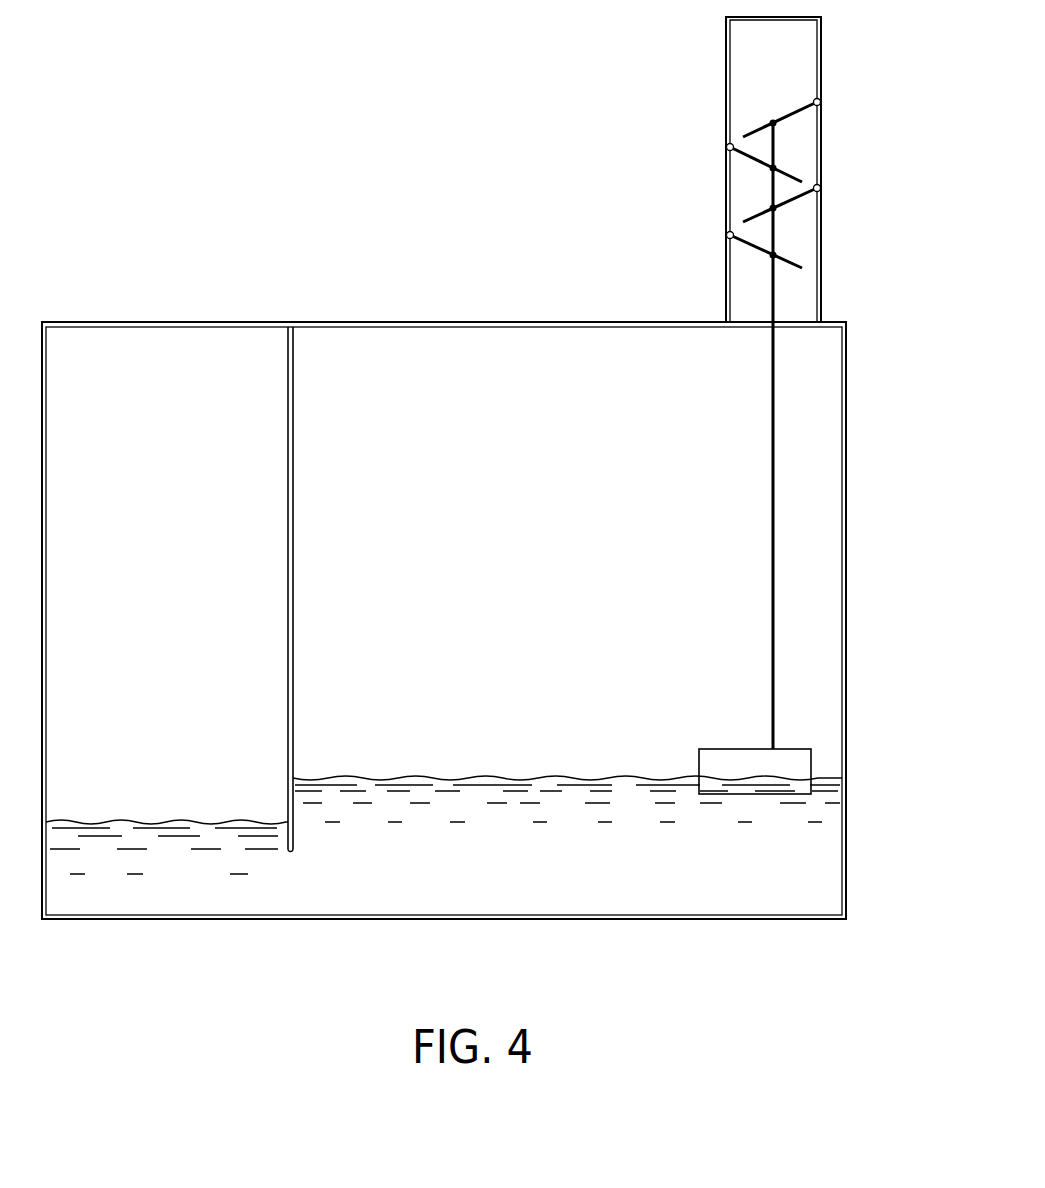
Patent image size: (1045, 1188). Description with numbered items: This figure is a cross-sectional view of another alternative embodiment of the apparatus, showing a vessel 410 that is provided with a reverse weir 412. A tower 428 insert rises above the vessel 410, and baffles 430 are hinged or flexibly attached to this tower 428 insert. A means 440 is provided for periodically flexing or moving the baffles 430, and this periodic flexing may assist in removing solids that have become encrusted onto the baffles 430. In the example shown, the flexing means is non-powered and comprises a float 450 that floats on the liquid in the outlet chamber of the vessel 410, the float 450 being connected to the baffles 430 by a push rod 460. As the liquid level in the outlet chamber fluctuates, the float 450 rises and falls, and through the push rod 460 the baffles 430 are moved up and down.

The vessel 410 is at (467, 322).
The reverse weir 412 is at (292, 577).
The tower 428 is at (822, 142).
The baffles 430 is at (787, 112).
The means for periodically flexing or moving the baffles 440 is at (788, 568).
The float 450 is at (733, 749).
The push rod 460 is at (775, 438).